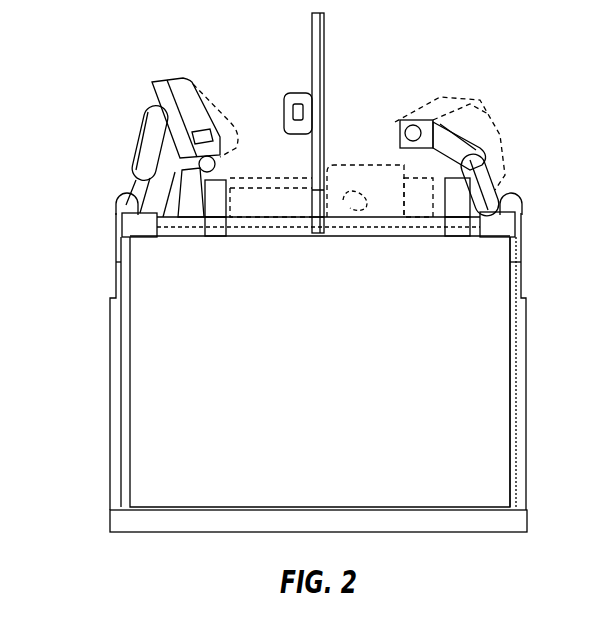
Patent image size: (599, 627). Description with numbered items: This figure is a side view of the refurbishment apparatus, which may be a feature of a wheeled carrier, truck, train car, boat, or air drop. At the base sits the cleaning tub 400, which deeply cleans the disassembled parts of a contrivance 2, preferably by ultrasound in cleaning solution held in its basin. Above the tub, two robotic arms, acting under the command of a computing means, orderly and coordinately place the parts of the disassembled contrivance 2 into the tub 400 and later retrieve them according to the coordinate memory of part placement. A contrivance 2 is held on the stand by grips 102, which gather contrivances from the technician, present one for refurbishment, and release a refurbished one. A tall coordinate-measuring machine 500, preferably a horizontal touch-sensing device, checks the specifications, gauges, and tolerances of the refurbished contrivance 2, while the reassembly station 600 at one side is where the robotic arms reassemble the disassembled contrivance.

The contrivance 2 is at (288, 182).
The grip 102 is at (420, 195).
The cleaning tub 400 is at (495, 421).
The coordinate-measuring machine 500 is at (297, 94).
The reassembly station 600 is at (133, 227).